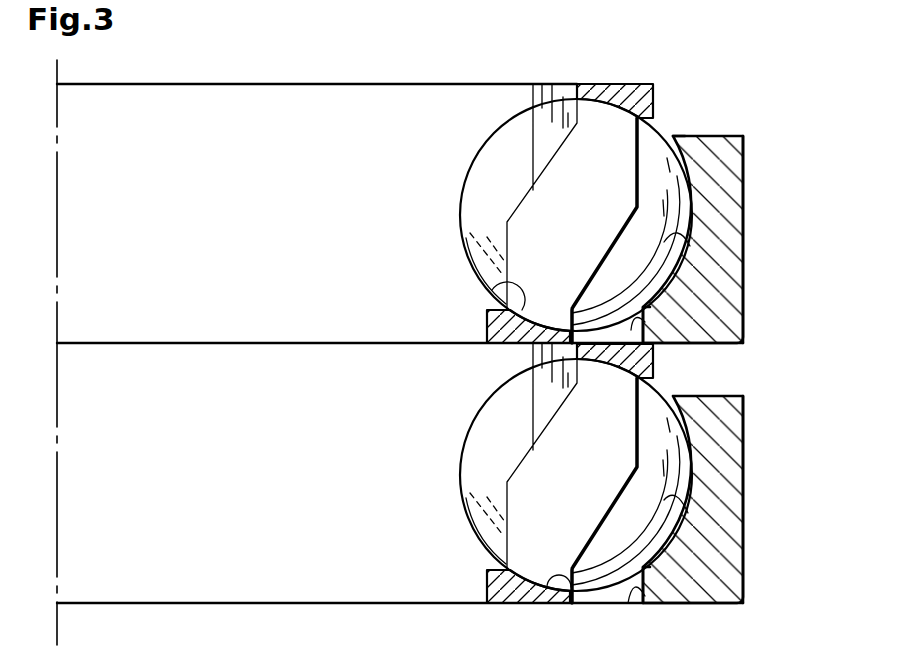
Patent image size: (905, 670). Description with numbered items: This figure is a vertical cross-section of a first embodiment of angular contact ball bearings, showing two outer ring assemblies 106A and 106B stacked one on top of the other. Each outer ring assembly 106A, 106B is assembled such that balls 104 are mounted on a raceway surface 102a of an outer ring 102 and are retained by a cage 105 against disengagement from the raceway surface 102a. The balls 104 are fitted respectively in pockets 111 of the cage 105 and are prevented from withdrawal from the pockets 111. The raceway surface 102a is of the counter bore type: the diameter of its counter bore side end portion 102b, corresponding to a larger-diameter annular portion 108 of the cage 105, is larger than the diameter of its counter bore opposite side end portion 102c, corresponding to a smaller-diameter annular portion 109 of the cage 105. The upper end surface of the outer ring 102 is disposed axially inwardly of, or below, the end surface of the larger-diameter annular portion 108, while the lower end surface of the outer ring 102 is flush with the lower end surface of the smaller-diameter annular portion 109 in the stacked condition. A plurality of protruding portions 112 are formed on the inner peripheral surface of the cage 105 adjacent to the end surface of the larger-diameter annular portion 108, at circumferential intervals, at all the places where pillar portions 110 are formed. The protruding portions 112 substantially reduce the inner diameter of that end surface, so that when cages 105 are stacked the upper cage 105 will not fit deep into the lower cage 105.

The outer ring 102 is at (730, 278).
The raceway surface 102a is at (690, 246).
The counter bore side end portion 102b is at (671, 136).
The counter bore opposite side end portion 102c is at (733, 317).
The balls 104 is at (663, 183).
The cage 105 is at (520, 200).
The outer ring assembly 106A is at (747, 457).
The outer ring assembly 106B is at (747, 203).
The larger-diameter annular portion 108 is at (690, 91).
The smaller-diameter annular portion 109 is at (483, 330).
The pillar portions 110 is at (530, 238).
The pockets 111 is at (492, 290).
The protruding portions 112 is at (573, 101).